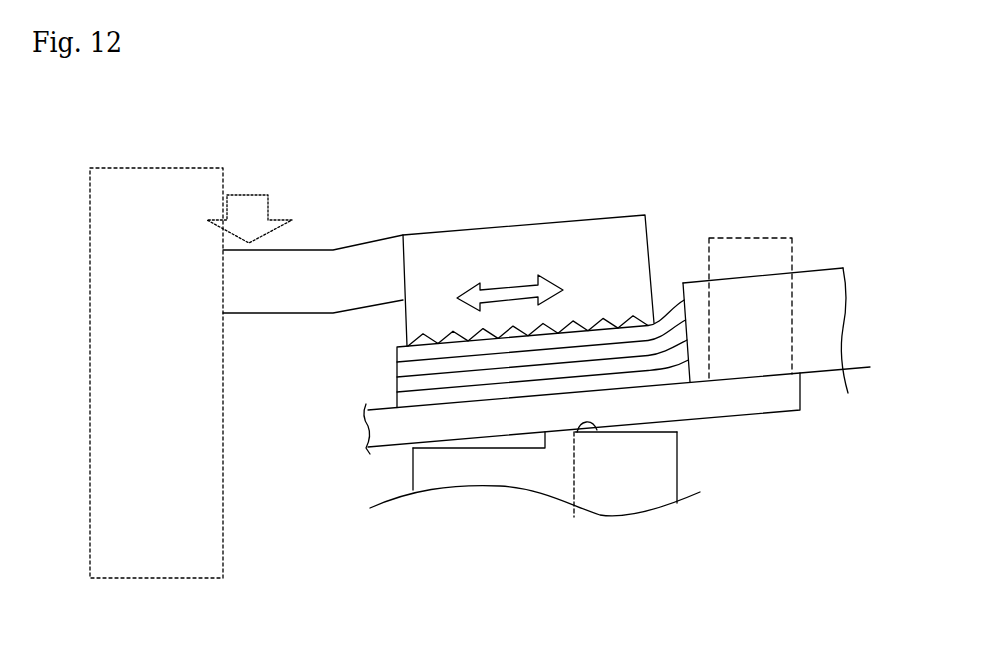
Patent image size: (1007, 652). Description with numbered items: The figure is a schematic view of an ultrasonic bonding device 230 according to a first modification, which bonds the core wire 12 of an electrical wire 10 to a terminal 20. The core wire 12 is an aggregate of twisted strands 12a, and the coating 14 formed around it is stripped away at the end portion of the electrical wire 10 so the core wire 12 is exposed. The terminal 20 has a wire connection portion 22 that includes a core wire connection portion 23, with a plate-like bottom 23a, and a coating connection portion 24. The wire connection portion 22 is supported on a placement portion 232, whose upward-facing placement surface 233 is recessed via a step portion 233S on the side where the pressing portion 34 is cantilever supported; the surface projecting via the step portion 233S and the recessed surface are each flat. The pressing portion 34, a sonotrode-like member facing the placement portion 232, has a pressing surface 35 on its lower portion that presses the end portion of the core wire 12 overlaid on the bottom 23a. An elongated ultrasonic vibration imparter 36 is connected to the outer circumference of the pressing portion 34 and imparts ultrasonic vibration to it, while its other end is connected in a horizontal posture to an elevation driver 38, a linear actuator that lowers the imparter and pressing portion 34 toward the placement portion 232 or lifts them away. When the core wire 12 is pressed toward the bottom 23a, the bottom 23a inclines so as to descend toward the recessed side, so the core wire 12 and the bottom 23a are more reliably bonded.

The electrical wire 10 is at (819, 269).
The core wire 12 is at (397, 351).
The strand 12a is at (397, 381).
The coating 14 is at (796, 289).
The terminal 20 is at (802, 412).
The wire connection portion 22 is at (762, 413).
The core wire connection portion 23 is at (457, 440).
The bottom 23a is at (676, 468).
The coating connection portion 24 is at (804, 393).
The ultrasonic bonding device 230 is at (314, 173).
The placement portion 232 is at (678, 463).
The placement surface 233 is at (505, 493).
The step portion 233S is at (527, 440).
The pressing portion 34 is at (654, 215).
The pressing surface 35 is at (627, 321).
The ultrasonic vibration imparter 36 is at (336, 249).
The elevation driver 38 is at (202, 167).